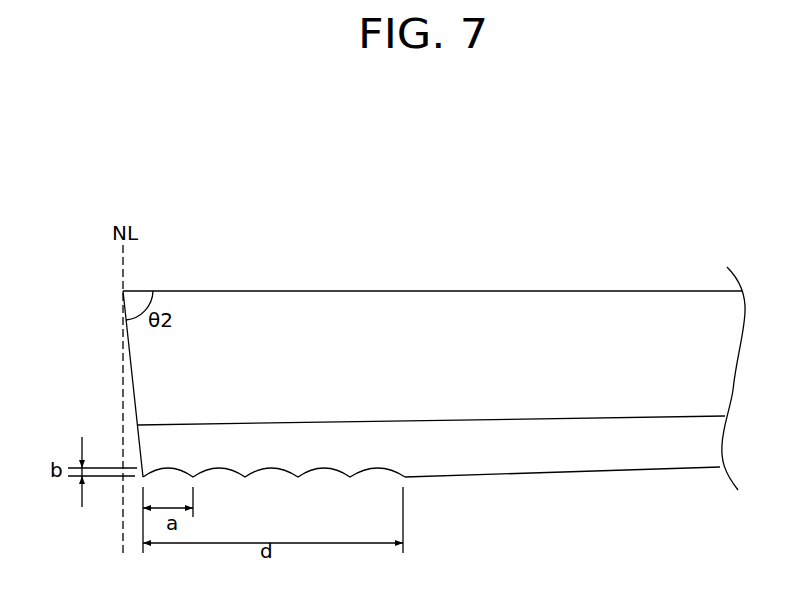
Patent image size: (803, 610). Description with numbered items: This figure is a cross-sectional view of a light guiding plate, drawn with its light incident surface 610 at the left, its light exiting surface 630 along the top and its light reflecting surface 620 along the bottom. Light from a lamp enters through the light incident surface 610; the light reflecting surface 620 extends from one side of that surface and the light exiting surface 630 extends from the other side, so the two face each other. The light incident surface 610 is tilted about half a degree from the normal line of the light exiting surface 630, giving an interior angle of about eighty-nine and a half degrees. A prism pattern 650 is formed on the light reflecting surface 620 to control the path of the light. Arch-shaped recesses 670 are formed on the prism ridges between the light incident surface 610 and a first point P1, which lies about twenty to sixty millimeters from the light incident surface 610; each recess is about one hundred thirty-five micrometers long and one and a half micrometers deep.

The light incident surface 610 is at (134, 398).
The light reflecting surface 620 is at (538, 474).
The light exiting surface 630 is at (398, 292).
The prism pattern 650 is at (627, 453).
The recesses 670 is at (267, 470).
The first point P1 is at (405, 478).